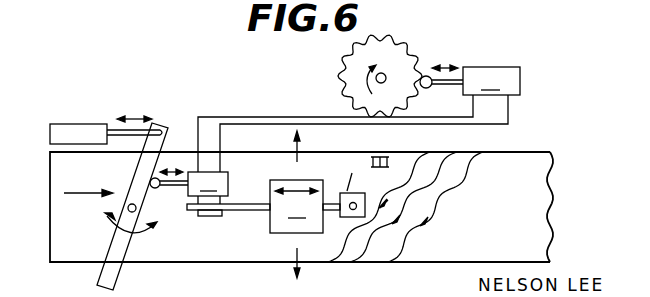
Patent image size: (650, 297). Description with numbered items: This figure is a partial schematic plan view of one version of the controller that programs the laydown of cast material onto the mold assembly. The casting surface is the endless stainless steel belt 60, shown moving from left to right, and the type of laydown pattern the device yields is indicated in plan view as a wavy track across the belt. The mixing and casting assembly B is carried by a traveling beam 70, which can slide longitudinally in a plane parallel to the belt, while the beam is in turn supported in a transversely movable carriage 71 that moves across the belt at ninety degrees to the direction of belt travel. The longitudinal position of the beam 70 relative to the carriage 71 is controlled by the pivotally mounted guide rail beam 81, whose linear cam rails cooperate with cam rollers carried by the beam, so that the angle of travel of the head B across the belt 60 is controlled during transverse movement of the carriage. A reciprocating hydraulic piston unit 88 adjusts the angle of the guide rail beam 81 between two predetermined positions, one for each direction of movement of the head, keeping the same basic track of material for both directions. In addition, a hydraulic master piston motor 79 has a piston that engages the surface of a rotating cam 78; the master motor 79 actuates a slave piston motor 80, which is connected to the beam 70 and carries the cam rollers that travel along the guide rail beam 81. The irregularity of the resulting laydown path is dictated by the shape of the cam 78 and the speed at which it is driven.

The endless stainless steel belt 60 is at (216, 257).
The traveling beam 70 is at (243, 207).
The transversely movable carriage 71 is at (305, 206).
The cam 78 is at (400, 57).
The hydraulic master piston motor 79 is at (491, 81).
The slave piston motor 80 is at (329, 149).
The guide rail beam 81 is at (113, 272).
The reciprocating hydraulic piston unit 88 is at (72, 128).
The mixing and casting assembly B is at (365, 196).